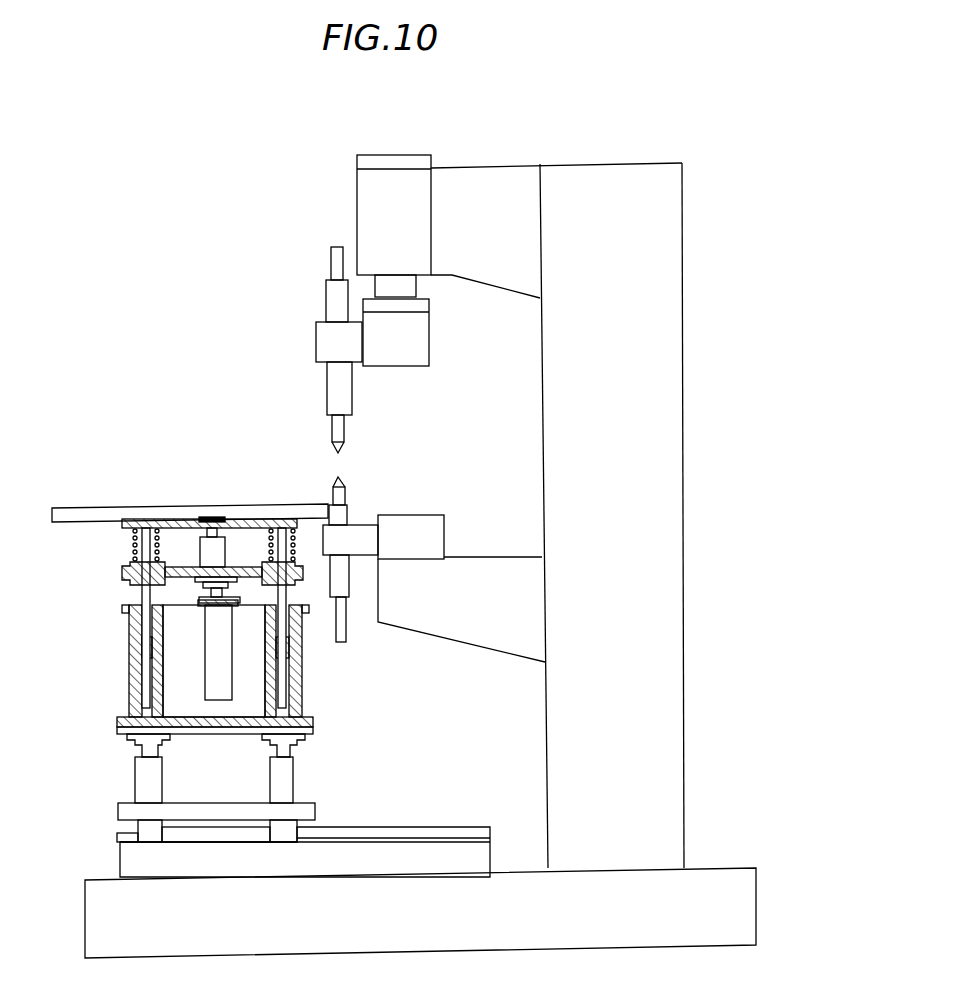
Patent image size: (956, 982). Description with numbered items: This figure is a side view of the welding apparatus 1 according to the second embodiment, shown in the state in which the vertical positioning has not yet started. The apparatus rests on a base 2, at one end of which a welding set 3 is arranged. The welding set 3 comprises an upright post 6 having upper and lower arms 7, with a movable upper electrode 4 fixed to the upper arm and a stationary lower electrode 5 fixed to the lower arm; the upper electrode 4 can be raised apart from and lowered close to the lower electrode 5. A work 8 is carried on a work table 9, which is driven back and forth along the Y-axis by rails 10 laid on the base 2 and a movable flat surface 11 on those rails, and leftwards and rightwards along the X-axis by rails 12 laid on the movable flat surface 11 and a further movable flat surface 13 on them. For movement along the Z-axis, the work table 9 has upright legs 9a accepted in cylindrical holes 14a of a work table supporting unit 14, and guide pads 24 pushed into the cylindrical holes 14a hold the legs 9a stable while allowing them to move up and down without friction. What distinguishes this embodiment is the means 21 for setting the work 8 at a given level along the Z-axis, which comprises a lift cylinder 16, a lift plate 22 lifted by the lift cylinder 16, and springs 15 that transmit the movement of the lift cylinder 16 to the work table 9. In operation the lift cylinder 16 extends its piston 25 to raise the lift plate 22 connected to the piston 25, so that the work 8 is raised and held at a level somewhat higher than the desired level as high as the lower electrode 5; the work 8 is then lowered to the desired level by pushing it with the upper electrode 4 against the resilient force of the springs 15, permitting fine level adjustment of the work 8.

The welding apparatus 1 is at (240, 333).
The base 2 is at (712, 870).
The welding set 3 is at (690, 232).
The upper electrode 4 is at (345, 424).
The lower electrode 5 is at (340, 493).
The upright post 6 is at (672, 375).
The arms 7 is at (500, 275).
The work 8 is at (98, 508).
The work table 9 is at (122, 525).
The legs of the work table 9a is at (128, 582).
The rails 10 is at (430, 827).
The movable flat surface 11 is at (315, 808).
The rails 12 is at (296, 762).
The movable flat surface 13 is at (315, 722).
The work table supporting unit 14 is at (308, 668).
The cylindrical holes 14a is at (293, 692).
The springs 15 is at (133, 553).
The lift cylinder 16 is at (208, 638).
The means for setting a work at a given level 21 is at (125, 662).
The lift plate 22 is at (128, 586).
The guide pads 24 is at (210, 516).
The piston 25 is at (222, 592).